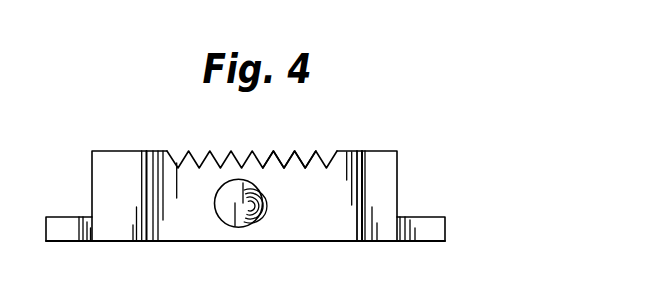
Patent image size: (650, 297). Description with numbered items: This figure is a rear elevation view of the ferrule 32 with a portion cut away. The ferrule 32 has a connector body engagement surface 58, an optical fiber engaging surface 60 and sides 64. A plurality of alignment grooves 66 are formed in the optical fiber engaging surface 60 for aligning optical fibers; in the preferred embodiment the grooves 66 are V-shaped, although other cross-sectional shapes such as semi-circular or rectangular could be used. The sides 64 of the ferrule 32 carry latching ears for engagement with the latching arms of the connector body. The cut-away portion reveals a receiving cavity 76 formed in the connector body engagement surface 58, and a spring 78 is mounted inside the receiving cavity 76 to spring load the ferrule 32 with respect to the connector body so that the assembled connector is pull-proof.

The ferrule 32 is at (121, 252).
The connector body engagement surface 58 is at (357, 227).
The optical fiber engaging surface 60 is at (190, 150).
The sides 64 is at (92, 183).
The alignment grooves 66 is at (284, 166).
The receiving cavity 76 is at (227, 213).
The spring 78 is at (258, 202).